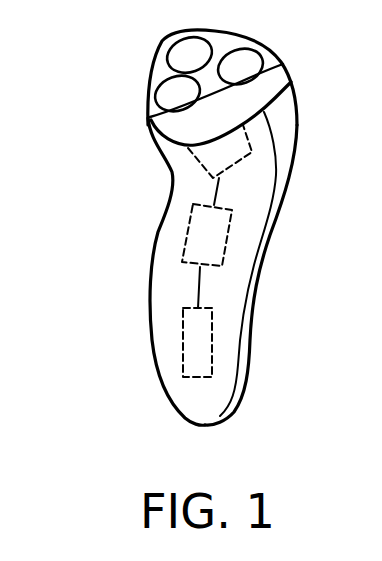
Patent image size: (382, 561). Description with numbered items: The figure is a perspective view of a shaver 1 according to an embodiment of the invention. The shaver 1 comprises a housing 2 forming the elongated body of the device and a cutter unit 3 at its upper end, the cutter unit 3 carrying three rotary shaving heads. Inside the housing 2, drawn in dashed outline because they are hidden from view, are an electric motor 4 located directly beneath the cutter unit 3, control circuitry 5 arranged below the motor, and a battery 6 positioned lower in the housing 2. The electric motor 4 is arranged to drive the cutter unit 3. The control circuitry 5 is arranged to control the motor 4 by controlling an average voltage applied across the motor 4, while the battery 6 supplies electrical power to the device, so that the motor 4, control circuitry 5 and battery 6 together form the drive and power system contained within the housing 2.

The shaver 1 is at (78, 86).
The housing 2 is at (257, 303).
The cutter unit 3 is at (280, 72).
The electric motor 4 is at (197, 160).
The control circuitry 5 is at (188, 230).
The battery 6 is at (183, 343).